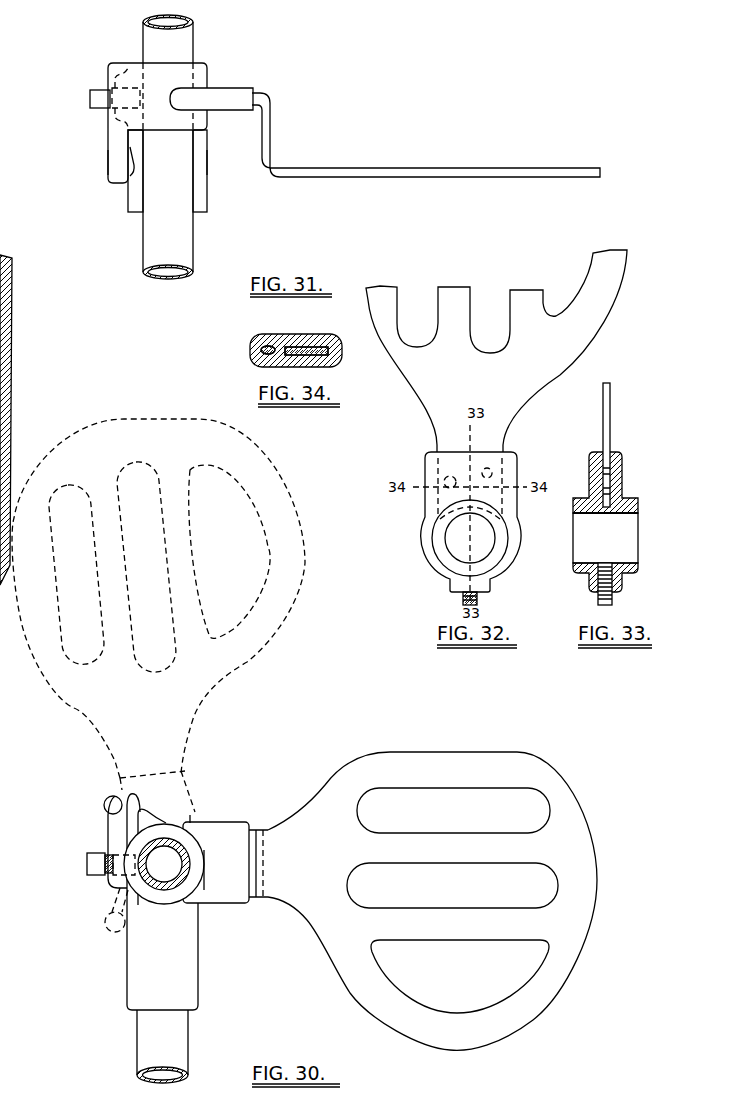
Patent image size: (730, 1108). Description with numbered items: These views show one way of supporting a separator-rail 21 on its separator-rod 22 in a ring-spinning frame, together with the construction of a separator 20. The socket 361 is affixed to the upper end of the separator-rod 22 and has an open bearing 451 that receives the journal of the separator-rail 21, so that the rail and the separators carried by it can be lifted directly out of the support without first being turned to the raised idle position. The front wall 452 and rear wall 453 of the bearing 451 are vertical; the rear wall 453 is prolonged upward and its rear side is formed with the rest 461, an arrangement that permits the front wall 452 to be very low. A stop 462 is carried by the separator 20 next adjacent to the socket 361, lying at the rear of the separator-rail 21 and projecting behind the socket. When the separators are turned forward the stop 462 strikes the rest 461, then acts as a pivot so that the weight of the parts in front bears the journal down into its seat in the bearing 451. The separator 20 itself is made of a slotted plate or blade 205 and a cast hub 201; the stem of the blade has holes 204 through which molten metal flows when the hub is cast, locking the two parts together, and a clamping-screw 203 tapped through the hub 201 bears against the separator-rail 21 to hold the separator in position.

In FIG. 31, the separator 20 is at (437, 167).
In FIG. 32, the separator 20 is at (496, 351).
In FIG. 33, the separator 20 is at (611, 413).
In FIG. 30, the separator 20 is at (423, 901).
In FIG. 31, the separator-rail 21 is at (168, 147).
In FIG. 30, the separator-rail 21 is at (164, 864).
In FIG. 30, the separator-rod 22 is at (162, 1046).
In FIG. 31, the hub 201 is at (157, 123).
In FIG. 34, the hub 201 is at (252, 360).
In FIG. 32, the hub 201 is at (432, 540).
In FIG. 33, the hub 201 is at (640, 532).
In FIG. 30, the hub 201 is at (216, 862).
In FIG. 32, the clamping-screw 203 is at (462, 600).
In FIG. 33, the clamping-screw 203 is at (597, 600).
In FIG. 34, the holes 204 is at (265, 345).
In FIG. 32, the holes 204 is at (447, 478).
In FIG. 33, the holes 204 is at (604, 486).
In FIG. 34, the slotted plate or blade 205 is at (312, 356).
In FIG. 32, the slotted plate or blade 205 is at (608, 335).
In FIG. 30, the slotted plate or blade 205 is at (328, 955).
In FIG. 31, the socket 361 is at (208, 193).
In FIG. 30, the socket 361 is at (162, 907).
In FIG. 30, the open bearing 451 is at (191, 822).
In FIG. 31, the front wall 452 is at (199, 163).
In FIG. 30, the front wall 452 is at (201, 840).
In FIG. 31, the rear wall 453 is at (140, 200).
In FIG. 30, the rear wall 453 is at (133, 843).
In FIG. 31, the rest 461 is at (131, 169).
In FIG. 30, the rest 461 is at (123, 790).
In FIG. 31, the stop 462 is at (108, 163).
In FIG. 30, the stop 462 is at (105, 806).